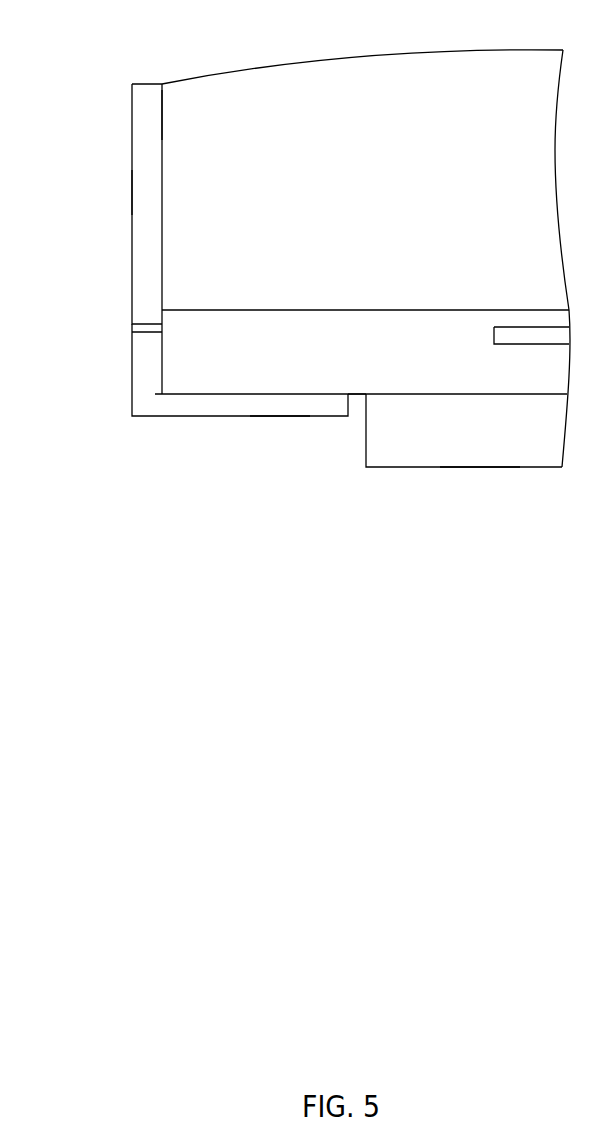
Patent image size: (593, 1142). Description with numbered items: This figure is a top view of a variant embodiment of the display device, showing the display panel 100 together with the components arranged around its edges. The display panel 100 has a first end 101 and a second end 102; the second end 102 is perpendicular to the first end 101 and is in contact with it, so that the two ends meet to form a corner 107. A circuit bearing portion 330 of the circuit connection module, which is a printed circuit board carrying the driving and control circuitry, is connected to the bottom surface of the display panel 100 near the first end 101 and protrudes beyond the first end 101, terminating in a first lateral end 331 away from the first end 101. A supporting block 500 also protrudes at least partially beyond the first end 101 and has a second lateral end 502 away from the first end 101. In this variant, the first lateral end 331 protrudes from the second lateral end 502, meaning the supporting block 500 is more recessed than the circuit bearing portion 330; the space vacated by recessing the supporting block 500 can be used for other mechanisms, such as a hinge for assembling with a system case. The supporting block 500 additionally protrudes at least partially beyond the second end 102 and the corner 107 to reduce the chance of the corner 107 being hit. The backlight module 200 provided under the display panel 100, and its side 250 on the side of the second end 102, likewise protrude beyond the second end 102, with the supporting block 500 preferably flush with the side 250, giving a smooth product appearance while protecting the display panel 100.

The display panel 100 is at (511, 116).
The first end 101 is at (357, 394).
The second end 102 is at (160, 115).
The corner 107 is at (160, 395).
The backlight module 200 is at (147, 153).
The side 250 is at (132, 193).
The circuit bearing portion 330 is at (437, 437).
The first lateral end 331 is at (480, 467).
The supporting block 500 is at (212, 418).
The second lateral end 502 is at (278, 417).